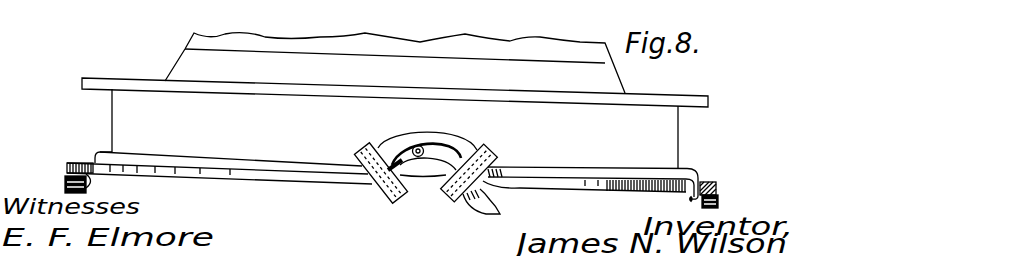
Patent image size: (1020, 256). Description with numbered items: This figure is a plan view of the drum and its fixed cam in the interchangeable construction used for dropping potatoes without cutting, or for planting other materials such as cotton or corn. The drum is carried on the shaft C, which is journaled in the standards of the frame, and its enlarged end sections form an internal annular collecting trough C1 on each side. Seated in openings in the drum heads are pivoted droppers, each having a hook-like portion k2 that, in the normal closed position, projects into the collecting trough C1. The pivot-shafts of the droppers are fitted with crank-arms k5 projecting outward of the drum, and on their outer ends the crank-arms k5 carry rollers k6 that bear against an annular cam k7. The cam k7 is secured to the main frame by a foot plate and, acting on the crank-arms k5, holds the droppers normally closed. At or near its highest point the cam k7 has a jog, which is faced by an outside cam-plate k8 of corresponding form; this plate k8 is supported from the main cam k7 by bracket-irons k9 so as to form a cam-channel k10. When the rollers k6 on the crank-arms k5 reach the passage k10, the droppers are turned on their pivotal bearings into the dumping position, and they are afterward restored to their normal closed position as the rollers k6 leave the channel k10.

The shaft C is at (395, 63).
The collecting trough C1 is at (647, 133).
The hook-like portion k2 is at (712, 186).
The crank-arm k5 is at (718, 165).
The roller k6 is at (741, 193).
The annular cam k7 is at (611, 158).
The outside cam-plate k8 is at (433, 172).
The bracket-iron k9 is at (516, 153).
The cam-channel k10 is at (448, 157).